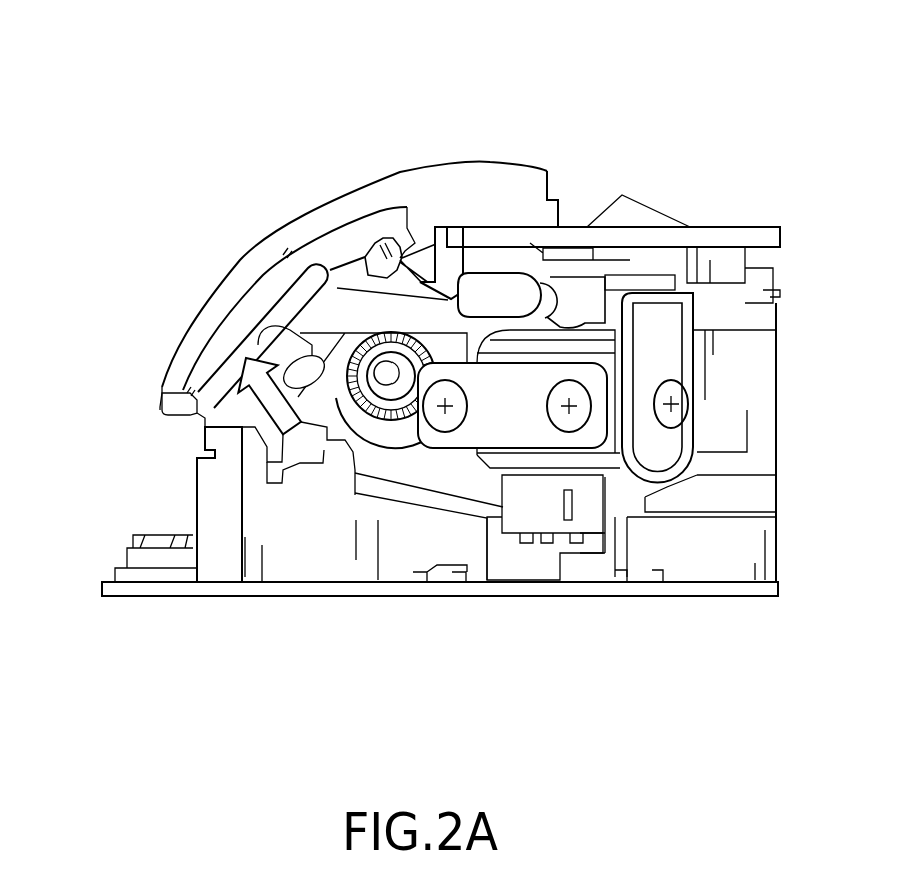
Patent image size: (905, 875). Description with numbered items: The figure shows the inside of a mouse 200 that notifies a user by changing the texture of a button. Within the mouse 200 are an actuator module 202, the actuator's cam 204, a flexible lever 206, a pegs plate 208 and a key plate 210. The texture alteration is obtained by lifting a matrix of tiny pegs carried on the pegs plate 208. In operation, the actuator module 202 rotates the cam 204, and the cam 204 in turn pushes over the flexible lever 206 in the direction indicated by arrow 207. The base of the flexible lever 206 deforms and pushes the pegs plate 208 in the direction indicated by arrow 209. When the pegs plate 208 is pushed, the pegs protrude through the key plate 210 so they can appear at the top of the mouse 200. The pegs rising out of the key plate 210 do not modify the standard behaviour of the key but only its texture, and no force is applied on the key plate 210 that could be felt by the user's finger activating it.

The mouse 200 is at (402, 717).
The actuator module 202 is at (587, 293).
The actuator's cam 204 is at (513, 285).
The flexible lever 206 is at (389, 293).
The arrow 207 is at (452, 237).
The pegs plate 208 is at (264, 276).
The arrow 209 is at (268, 402).
The key plate 210 is at (210, 293).